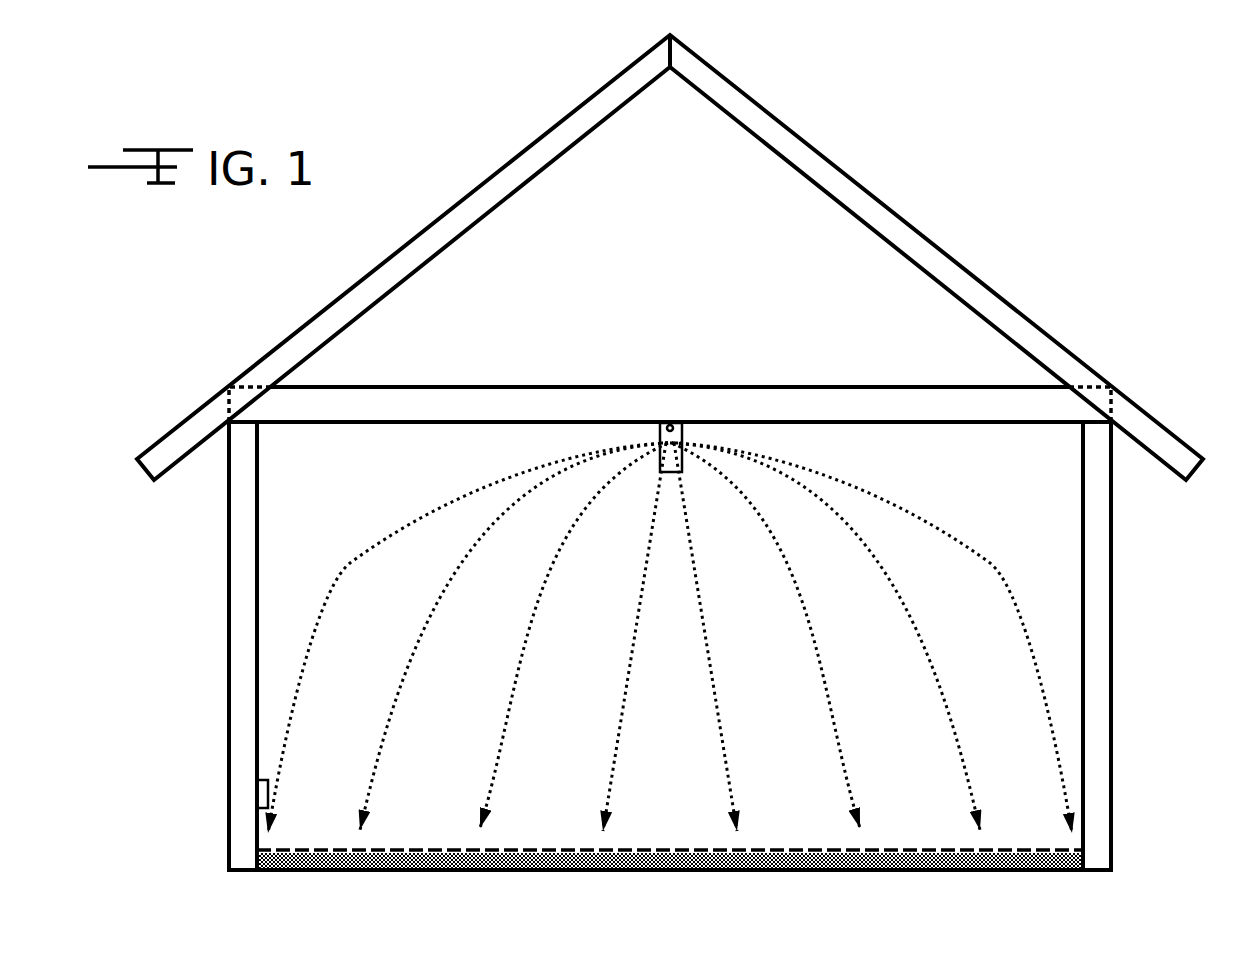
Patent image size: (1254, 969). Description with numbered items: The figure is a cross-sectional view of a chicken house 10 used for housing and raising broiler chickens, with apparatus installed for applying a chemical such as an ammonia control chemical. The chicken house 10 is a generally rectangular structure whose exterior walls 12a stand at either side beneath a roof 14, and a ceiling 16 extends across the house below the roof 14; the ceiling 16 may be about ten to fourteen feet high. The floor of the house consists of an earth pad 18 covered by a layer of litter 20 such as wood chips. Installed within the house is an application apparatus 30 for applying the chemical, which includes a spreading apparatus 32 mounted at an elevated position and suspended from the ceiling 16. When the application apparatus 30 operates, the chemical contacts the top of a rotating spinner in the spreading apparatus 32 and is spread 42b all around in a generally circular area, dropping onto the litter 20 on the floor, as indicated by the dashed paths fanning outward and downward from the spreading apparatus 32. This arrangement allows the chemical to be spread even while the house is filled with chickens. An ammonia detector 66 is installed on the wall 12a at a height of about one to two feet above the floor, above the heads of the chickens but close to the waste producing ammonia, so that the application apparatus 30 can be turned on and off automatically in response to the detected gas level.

The chicken house 10 is at (1050, 237).
The roof 14 is at (885, 204).
The ceiling 16 is at (434, 397).
The exterior wall 12a is at (237, 662).
The earth pad 18 is at (1057, 868).
The litter 20 is at (1008, 850).
The ammonia detector 66 is at (257, 795).
The spreading apparatus 32 is at (668, 425).
The spread chemical 42b is at (773, 567).
The application apparatus 30 is at (1030, 530).